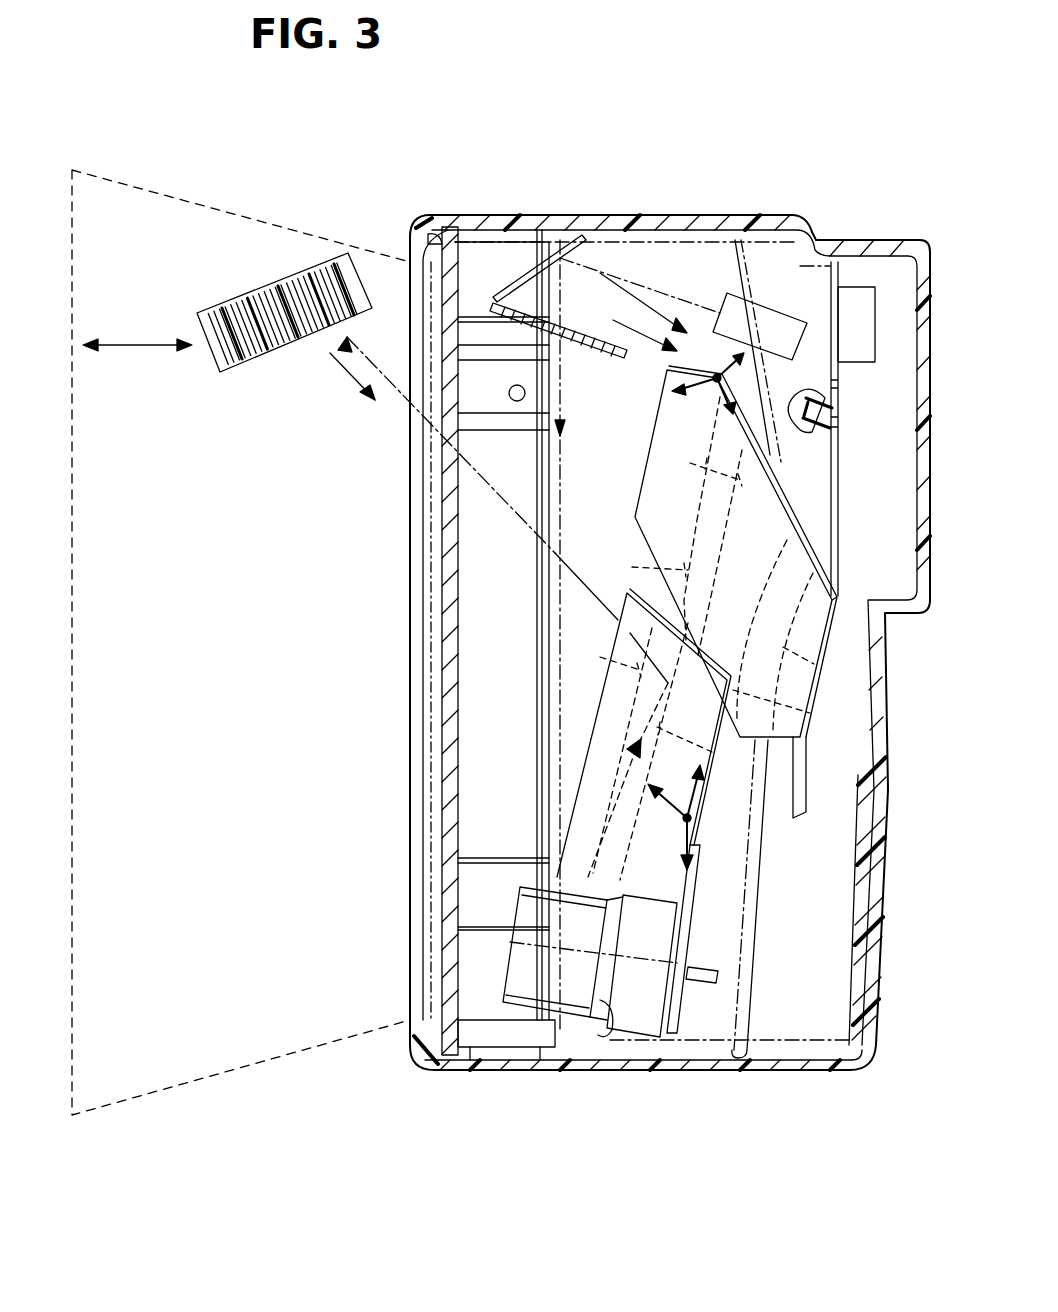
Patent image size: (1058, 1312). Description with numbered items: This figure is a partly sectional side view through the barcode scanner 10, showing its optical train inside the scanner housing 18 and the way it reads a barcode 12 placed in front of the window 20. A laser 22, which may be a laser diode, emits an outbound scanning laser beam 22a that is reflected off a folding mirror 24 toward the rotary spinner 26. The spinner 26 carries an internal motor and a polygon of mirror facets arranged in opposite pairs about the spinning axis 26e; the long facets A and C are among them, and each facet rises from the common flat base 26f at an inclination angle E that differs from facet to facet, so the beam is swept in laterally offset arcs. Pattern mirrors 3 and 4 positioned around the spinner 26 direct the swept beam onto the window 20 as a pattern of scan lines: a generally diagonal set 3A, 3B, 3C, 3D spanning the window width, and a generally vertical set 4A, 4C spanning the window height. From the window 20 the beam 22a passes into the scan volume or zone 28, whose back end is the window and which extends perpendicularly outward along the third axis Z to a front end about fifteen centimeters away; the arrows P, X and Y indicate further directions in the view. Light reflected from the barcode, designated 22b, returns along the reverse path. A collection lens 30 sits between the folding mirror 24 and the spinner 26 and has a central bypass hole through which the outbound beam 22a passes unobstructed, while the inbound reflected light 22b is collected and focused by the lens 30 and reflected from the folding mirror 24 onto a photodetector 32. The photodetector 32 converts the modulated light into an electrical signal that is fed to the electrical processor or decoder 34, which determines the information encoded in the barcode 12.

The barcode scanner 10 is at (662, 100).
The barcode 12 is at (215, 305).
The housing 18 is at (746, 215).
The window 20 is at (455, 698).
The laser 22 is at (766, 318).
The outbound scanning laser beam 22a is at (637, 279).
The reflected light 22b is at (635, 330).
The folding mirror 24 is at (522, 282).
The rotary spinner 26 is at (495, 953).
The spinning axis 26e is at (688, 1055).
The flat base 26f is at (595, 1040).
The scan volume or zone 28 is at (157, 1093).
The collection lens 30 is at (583, 345).
The photodetector 32 is at (785, 432).
The electrical processor or decoder 34 is at (855, 352).
The first mirror 3 is at (648, 492).
The scan line 3A is at (699, 468).
The scan line 3B is at (808, 714).
The scan line 3C is at (645, 565).
The scan line 3D is at (818, 666).
The second mirror 4 is at (613, 705).
The scan line 4A is at (704, 745).
The scan line 4C is at (606, 660).
The mirror facet A is at (530, 885).
The mirror facet C is at (512, 1012).
The inclination angle E is at (582, 990).
The direction P is at (140, 345).
The X axis X is at (688, 790).
The Y axis Y is at (672, 810).
The third axis Z is at (690, 836).